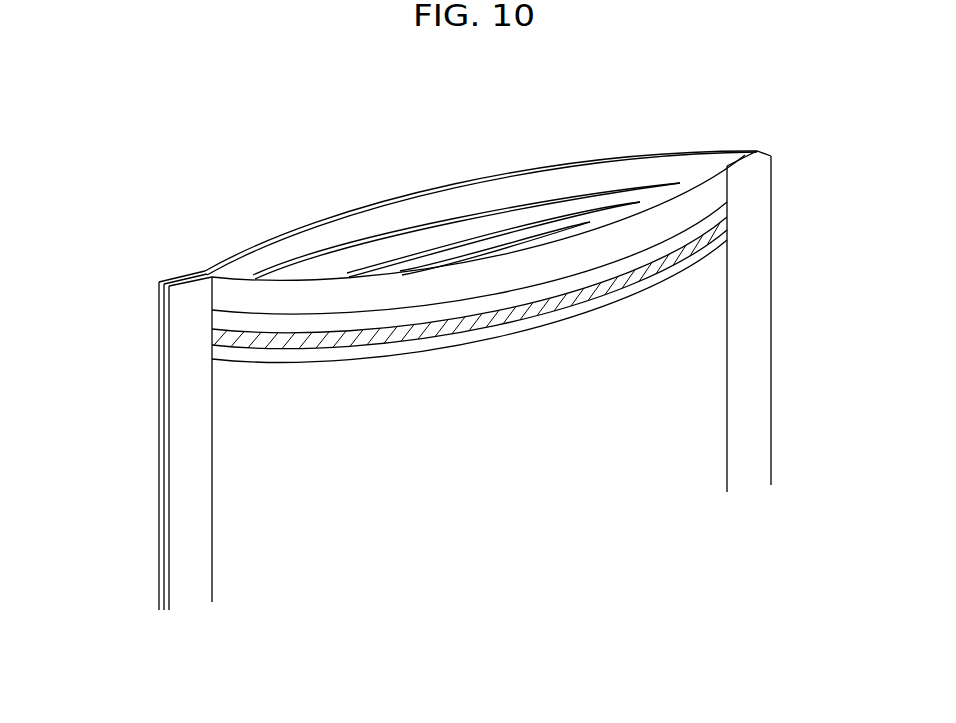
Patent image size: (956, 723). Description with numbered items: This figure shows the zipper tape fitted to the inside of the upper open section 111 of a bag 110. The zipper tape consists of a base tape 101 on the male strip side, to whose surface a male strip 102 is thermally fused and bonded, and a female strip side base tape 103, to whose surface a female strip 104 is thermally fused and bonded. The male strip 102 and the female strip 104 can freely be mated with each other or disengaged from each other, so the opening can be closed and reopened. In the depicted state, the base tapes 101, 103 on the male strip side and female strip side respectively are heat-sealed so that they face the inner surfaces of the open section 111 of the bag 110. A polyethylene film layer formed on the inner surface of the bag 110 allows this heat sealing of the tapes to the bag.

The base tape 101 is at (372, 243).
The male strip 102 is at (437, 237).
The female strip side base tape 103 is at (375, 355).
The female strip 104 is at (565, 295).
The bag 110 is at (158, 478).
The upper open section 111 is at (592, 160).